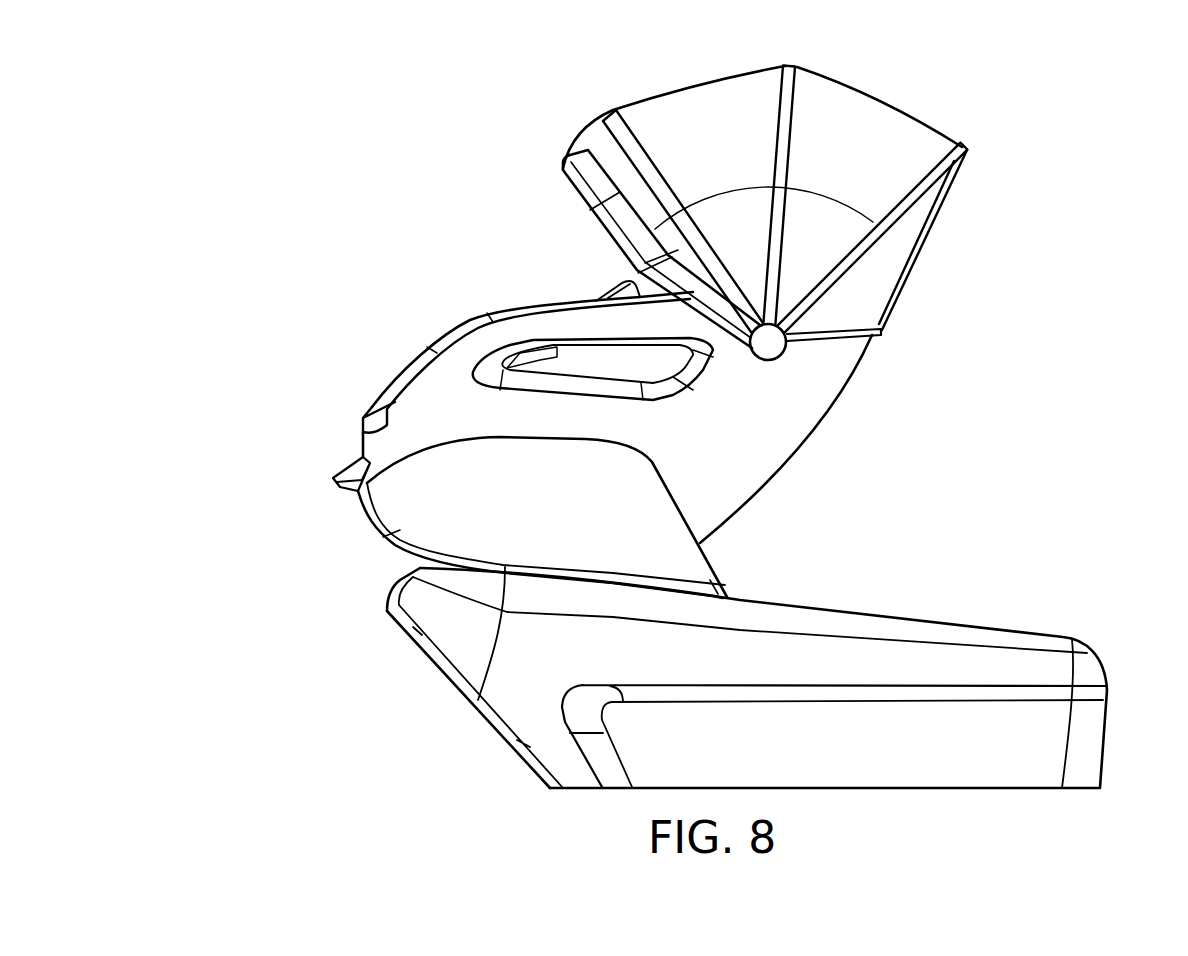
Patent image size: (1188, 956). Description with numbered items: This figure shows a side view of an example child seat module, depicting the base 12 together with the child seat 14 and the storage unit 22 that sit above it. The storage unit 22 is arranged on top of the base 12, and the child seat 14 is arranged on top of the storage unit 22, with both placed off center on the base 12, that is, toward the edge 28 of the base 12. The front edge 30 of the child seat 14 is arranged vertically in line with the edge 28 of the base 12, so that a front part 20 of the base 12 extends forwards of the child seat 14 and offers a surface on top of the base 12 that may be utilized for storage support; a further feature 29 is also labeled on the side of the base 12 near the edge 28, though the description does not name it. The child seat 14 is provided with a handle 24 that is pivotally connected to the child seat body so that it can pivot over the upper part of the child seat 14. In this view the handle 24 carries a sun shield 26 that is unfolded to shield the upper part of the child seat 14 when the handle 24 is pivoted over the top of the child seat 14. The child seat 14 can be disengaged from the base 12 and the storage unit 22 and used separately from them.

The base 12 is at (851, 665).
The child seat 14 is at (743, 398).
The front part 20 is at (1047, 557).
The storage unit 22 is at (448, 495).
The handle 24 is at (622, 220).
The sun shield 26 is at (893, 132).
The edge 28 is at (395, 590).
The base side seam 29 is at (527, 653).
The front edge 30 is at (360, 430).